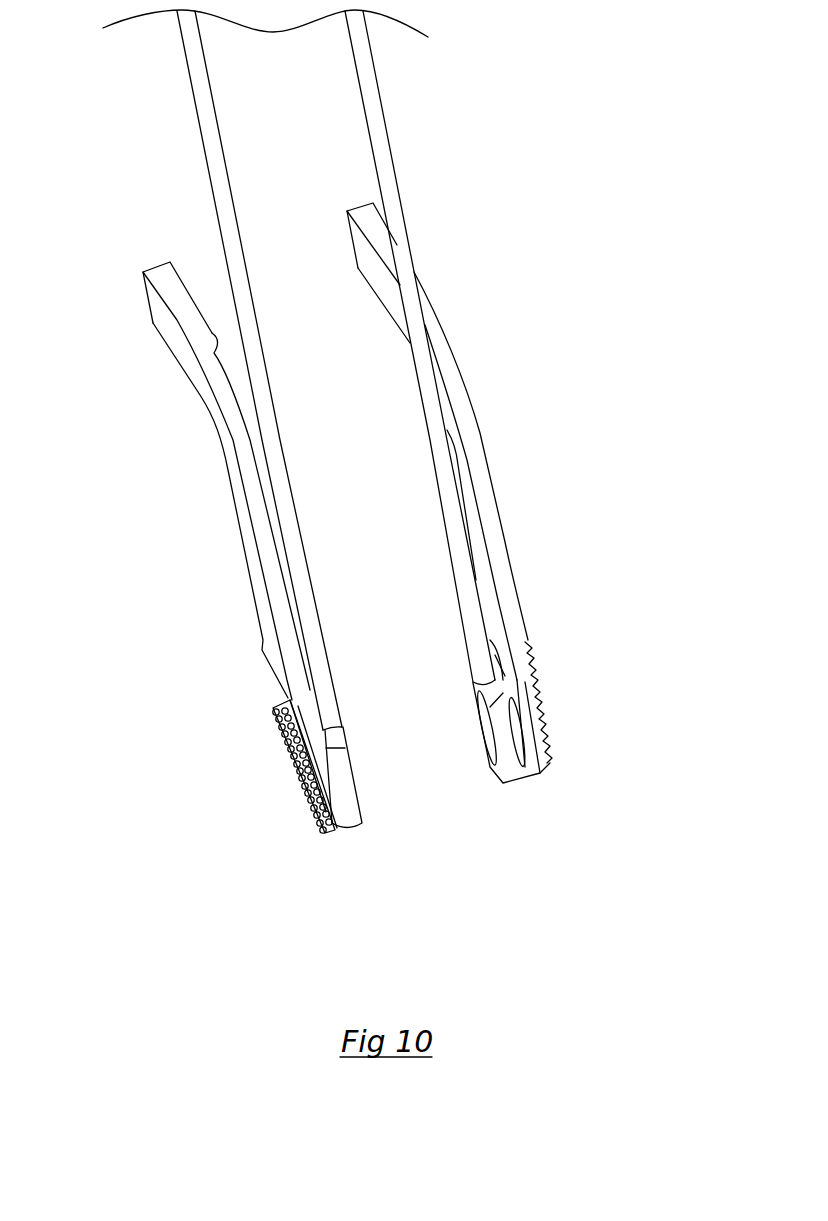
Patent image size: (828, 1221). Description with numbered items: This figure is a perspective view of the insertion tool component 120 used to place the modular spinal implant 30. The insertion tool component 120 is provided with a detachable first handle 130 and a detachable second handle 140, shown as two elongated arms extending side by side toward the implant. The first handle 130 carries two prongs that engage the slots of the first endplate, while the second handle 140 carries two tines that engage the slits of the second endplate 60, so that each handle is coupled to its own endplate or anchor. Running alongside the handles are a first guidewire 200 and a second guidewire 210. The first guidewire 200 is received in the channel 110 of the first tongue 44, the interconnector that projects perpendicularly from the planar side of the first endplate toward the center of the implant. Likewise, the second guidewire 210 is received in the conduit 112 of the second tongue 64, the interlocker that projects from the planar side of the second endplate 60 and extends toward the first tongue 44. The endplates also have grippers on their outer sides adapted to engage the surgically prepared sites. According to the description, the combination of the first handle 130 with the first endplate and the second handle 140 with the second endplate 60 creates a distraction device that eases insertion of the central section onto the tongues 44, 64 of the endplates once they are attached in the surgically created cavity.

The first guidewire 200 is at (200, 143).
The second guidewire 210 is at (448, 346).
The insertion tool component 120 is at (532, 521).
The first handle 130 is at (178, 481).
The second handle 140 is at (511, 441).
The channel 110 is at (386, 714).
The conduit 112 is at (430, 654).
The modular spinal implant 30 is at (216, 766).
The first tongue 44 is at (410, 791).
The second endplate 60 is at (604, 701).
The second tongue 64 is at (559, 760).